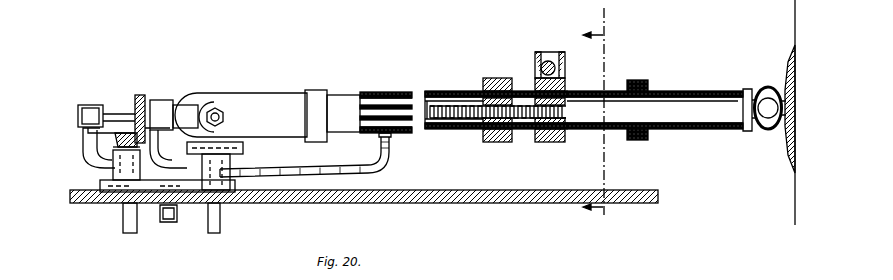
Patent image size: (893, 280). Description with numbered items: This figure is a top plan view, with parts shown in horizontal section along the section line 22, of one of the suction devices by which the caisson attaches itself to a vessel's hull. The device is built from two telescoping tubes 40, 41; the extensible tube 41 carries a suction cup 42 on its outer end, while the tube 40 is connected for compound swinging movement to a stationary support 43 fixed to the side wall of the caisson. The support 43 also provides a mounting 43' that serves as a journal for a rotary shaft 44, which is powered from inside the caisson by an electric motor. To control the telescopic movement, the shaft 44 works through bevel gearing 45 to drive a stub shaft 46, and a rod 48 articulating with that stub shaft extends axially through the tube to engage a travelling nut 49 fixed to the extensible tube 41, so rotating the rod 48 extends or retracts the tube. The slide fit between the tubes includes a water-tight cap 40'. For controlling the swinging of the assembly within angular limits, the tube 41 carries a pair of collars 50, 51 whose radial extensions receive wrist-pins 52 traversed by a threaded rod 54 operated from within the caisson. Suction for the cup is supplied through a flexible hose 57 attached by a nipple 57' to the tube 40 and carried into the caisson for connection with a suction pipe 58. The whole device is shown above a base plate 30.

The base plate 30 is at (490, 204).
The telescoping tube 40 is at (386, 101).
The water-tight cap 40' is at (644, 98).
The extensible tube 41 is at (700, 91).
The suction cup 42 is at (786, 66).
The stationary support 43 is at (230, 166).
The mounting 43' is at (149, 191).
The rotary shaft 44 is at (105, 150).
The bevel gearing 45 is at (136, 97).
The stub shaft 46 is at (197, 107).
The rod 48 is at (460, 100).
The travelling nut 49 is at (470, 128).
The collar 50 is at (502, 142).
The collar 51 is at (553, 142).
The wrist-pin 52 is at (565, 72).
The threaded rod 54 is at (541, 68).
The flexible hose 57 is at (317, 157).
The nipple 57' is at (399, 143).
The suction pipe 58 is at (220, 223).
The section line 22 is at (606, 117).